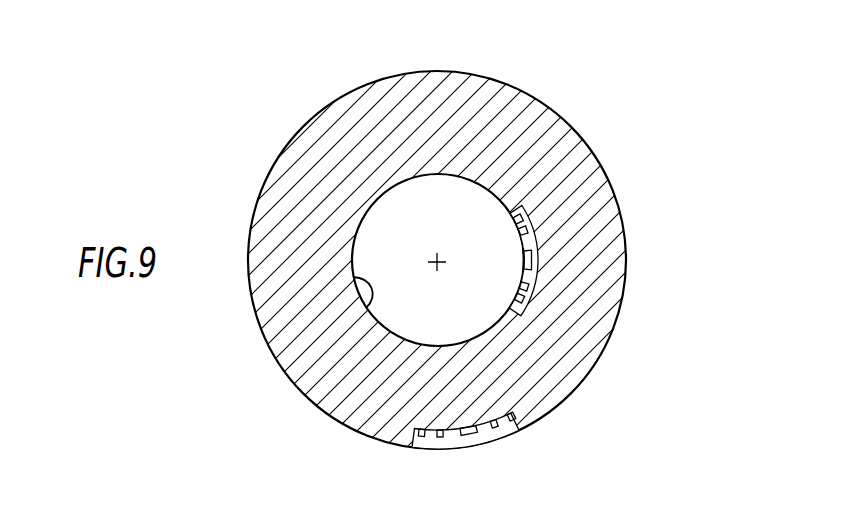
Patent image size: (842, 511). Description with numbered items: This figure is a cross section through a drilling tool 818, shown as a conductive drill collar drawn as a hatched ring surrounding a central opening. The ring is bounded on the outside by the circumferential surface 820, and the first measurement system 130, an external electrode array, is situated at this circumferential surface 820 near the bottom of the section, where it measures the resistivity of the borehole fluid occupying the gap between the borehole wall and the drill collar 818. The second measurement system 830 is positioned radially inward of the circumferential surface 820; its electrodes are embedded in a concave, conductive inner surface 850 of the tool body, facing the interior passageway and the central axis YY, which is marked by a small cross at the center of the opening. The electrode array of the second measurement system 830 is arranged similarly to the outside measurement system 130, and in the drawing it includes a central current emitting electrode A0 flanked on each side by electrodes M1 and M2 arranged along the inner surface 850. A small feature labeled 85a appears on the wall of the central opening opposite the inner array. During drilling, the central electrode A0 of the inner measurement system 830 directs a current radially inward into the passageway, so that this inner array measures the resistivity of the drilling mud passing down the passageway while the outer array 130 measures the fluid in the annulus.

The drilling tool 818 is at (543, 107).
The circumferential surface 820 is at (370, 217).
The second measurement system 830 is at (603, 274).
The concave, conductive inner surface 850 is at (524, 276).
The bore notch 85a is at (368, 291).
The first measurement system 130 is at (493, 443).
The central axis YY is at (436, 258).
The sensor element M1 is at (526, 232).
The sensor element M2 is at (523, 209).
The central current emitting electrode A0 is at (532, 262).